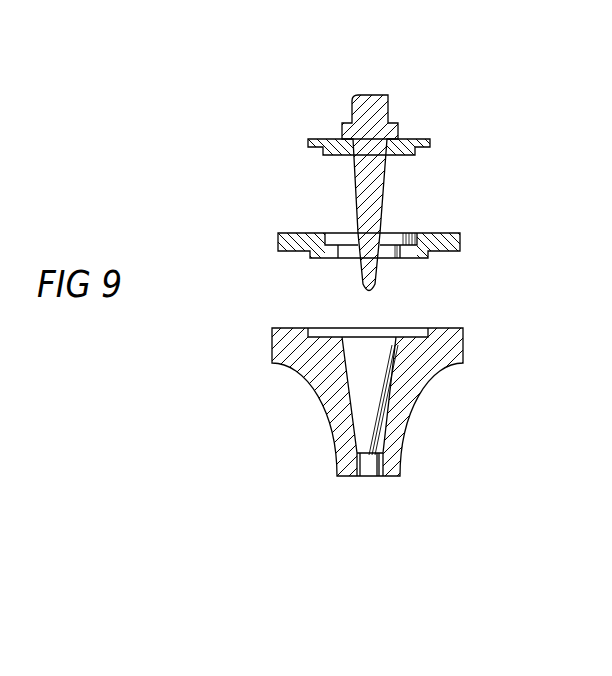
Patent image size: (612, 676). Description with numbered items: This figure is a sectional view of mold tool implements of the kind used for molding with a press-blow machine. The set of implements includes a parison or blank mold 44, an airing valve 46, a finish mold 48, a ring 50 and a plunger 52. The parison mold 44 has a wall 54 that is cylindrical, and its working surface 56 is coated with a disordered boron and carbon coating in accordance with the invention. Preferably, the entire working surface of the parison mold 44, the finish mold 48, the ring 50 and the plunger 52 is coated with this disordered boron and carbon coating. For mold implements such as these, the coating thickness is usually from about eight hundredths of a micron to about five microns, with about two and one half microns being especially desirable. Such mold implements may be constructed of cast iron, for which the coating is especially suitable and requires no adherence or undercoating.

The parison mold 44 is at (387, 94).
The airing valve 46 is at (370, 470).
The finish mold 48 is at (282, 240).
The ring 50 is at (310, 140).
The plunger 52 is at (360, 100).
The wall 54 is at (317, 392).
The working surface 56 is at (392, 352).